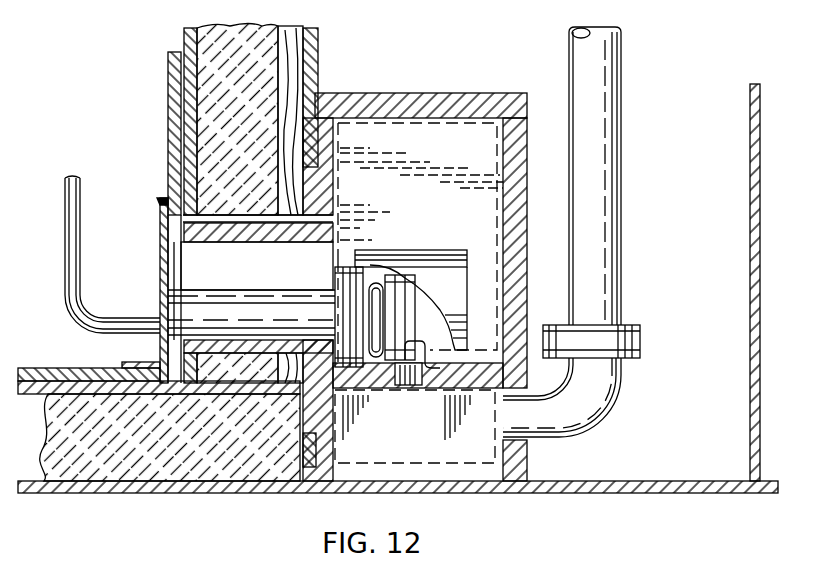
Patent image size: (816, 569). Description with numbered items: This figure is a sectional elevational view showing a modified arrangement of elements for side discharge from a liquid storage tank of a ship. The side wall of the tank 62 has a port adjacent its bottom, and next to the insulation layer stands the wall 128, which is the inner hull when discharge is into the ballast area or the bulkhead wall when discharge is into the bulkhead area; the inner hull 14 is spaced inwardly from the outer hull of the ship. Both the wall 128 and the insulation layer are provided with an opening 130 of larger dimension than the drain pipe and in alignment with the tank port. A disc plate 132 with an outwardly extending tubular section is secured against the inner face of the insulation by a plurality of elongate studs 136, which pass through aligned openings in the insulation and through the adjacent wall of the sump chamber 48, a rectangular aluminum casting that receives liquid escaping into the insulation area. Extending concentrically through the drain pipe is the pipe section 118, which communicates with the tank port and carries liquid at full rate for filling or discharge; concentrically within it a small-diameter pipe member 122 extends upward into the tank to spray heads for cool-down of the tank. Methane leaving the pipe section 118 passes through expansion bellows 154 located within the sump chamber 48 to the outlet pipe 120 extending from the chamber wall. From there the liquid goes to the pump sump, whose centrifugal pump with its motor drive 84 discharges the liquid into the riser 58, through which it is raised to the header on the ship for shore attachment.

The inner hull 14 is at (175, 488).
The sump chamber 48 is at (428, 157).
The riser 58 is at (619, 107).
The side wall of the tank 62 is at (167, 108).
The motor drive 84 is at (441, 251).
The pipe section 118 is at (268, 290).
The pipe 120 is at (540, 442).
The pipe member 122 is at (81, 199).
The inner hull or bulkhead wall 128 is at (312, 51).
The opening 130 is at (243, 277).
The disc plate 132 is at (163, 197).
The elongate studs 136 is at (268, 198).
The expansion bellows 154 is at (378, 278).